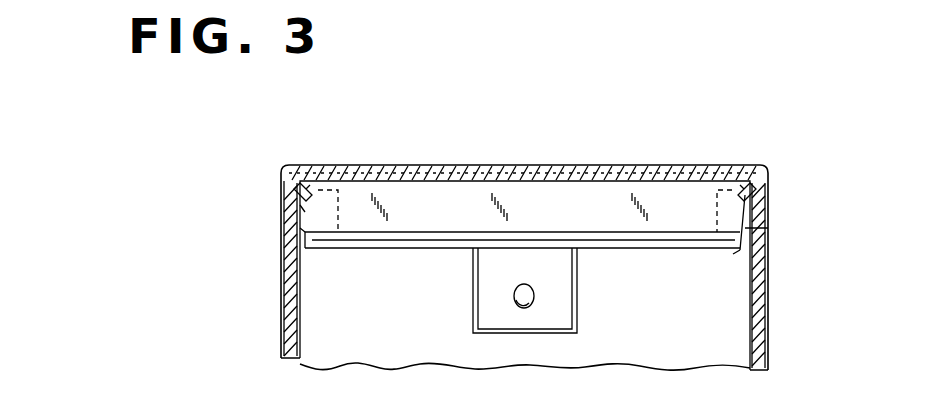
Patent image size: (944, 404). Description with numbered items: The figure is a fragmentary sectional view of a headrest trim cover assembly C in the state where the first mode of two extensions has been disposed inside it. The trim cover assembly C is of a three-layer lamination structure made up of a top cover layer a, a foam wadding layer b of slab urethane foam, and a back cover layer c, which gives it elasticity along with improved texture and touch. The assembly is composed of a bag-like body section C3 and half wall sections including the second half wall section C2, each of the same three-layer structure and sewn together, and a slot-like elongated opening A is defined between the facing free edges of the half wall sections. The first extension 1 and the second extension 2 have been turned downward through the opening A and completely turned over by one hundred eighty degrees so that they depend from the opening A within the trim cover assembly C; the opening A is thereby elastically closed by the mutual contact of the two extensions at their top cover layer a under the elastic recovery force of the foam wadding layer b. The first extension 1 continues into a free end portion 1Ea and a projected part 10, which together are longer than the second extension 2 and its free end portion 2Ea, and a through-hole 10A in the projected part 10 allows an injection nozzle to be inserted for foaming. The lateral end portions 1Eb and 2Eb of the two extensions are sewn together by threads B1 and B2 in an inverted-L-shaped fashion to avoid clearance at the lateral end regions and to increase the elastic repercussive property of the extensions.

The first extension 1 is at (700, 249).
The second extension 2 is at (580, 170).
The projected part 10 is at (497, 335).
The through-hole 10A is at (528, 306).
The elongated opening A is at (428, 250).
The trim cover assembly C is at (200, 264).
The second half wall section C2 is at (430, 170).
The bag-like body section C3 is at (770, 325).
The top cover layer a is at (283, 278).
The foam wadding layer b is at (283, 304).
The back cover layer c is at (283, 336).
The thread B1 is at (742, 128).
The thread B2 is at (714, 170).
The free end portion 1Ea is at (655, 250).
The lateral end portion 1Eb is at (283, 238).
The free end portion of second extension 2Ea is at (624, 255).
The lateral end portion 2Eb is at (283, 206).